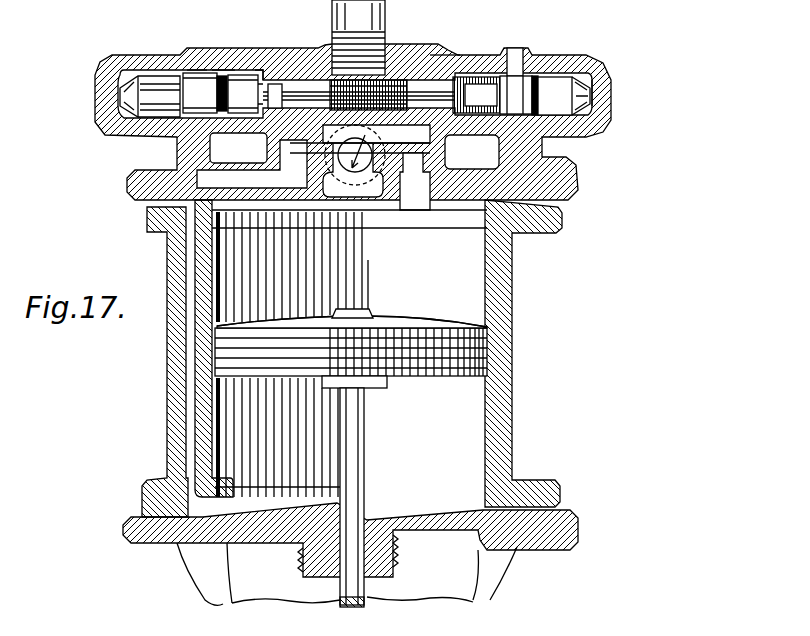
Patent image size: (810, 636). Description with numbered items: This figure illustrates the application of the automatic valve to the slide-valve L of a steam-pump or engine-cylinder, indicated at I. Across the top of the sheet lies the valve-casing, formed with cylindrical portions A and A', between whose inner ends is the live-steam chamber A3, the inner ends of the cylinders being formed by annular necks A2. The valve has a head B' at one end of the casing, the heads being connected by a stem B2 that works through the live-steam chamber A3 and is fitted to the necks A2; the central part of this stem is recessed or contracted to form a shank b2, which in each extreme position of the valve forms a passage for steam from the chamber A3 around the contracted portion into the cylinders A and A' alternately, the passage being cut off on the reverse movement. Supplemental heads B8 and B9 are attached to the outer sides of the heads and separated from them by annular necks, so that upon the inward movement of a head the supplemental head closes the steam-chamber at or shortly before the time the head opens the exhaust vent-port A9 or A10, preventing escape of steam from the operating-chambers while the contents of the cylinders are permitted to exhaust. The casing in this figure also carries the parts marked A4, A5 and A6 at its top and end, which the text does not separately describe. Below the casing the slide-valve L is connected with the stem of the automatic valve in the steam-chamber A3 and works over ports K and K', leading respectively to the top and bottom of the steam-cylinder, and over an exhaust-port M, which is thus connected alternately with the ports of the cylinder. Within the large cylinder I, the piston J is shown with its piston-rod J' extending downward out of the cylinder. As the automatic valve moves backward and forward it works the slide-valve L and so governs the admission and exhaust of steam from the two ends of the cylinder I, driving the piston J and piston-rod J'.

The cylindrical portion A is at (353, 299).
The cylindrical portion A' is at (225, 43).
The annular neck A2 is at (263, 80).
The live-steam chamber A3 is at (445, 35).
The vertical inlet cylinder A4 is at (382, 13).
The casing end cap A5 is at (612, 110).
The end nut A6 is at (176, 97).
The exhaust vent-port A9 is at (513, 50).
The exhaust vent-port A10 is at (197, 70).
The supplemental head B9 is at (205, 93).
The valve head B' is at (245, 94).
The connecting-stem B2 is at (327, 83).
The supplemental head B8 is at (568, 103).
The shank b2 is at (283, 184).
The port K' is at (238, 157).
The port K is at (413, 176).
The slide-valve L is at (437, 148).
The exhaust-port M is at (360, 161).
The steam-cylinder I is at (349, 266).
The piston J is at (351, 362).
The piston-rod J' is at (348, 497).